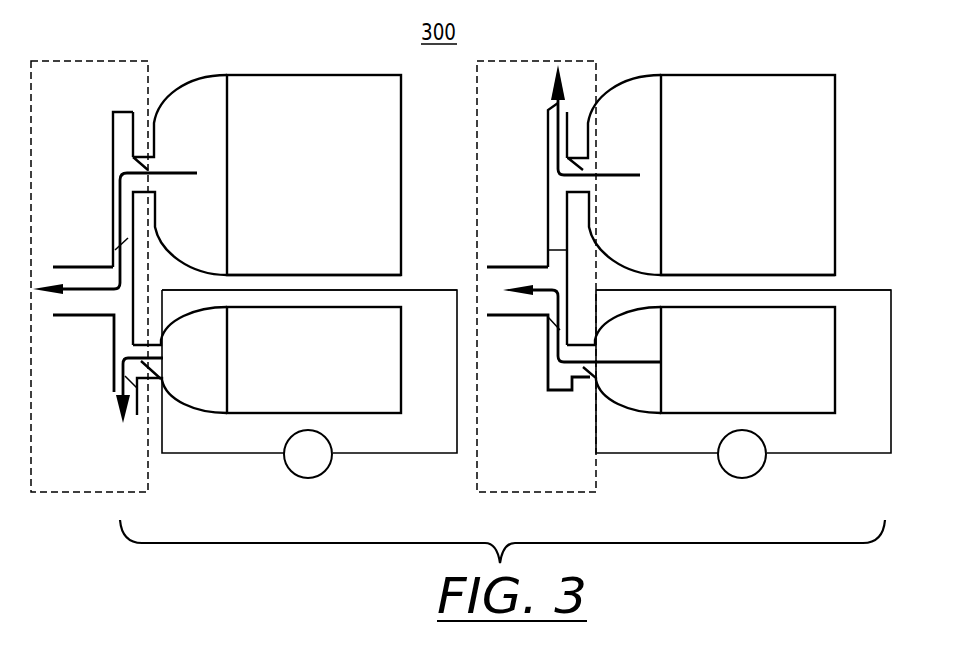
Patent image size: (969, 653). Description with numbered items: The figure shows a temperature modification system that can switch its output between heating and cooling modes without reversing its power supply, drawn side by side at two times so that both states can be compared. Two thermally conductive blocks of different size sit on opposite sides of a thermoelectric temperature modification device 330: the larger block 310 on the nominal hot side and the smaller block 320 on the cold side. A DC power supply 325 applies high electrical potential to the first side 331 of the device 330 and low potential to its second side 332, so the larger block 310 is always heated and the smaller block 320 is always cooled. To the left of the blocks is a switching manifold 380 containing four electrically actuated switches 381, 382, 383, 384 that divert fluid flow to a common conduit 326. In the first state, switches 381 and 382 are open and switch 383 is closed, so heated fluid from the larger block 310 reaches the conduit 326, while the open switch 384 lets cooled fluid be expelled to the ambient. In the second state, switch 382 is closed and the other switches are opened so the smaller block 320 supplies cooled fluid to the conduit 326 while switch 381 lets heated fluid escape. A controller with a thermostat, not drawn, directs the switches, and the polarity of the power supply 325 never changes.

The larger block 310 is at (302, 107).
The smaller block 320 is at (376, 403).
The DC power supply 325 is at (333, 467).
The conduit 326 is at (76, 292).
The temperature modification device 330 is at (364, 273).
The first side 331 is at (392, 286).
The second side 332 is at (226, 77).
The switching manifold 380 is at (136, 61).
The first switch 381 is at (133, 164).
The second switch 382 is at (115, 248).
The third switch 383 is at (115, 352).
The fourth switch 384 is at (142, 385).